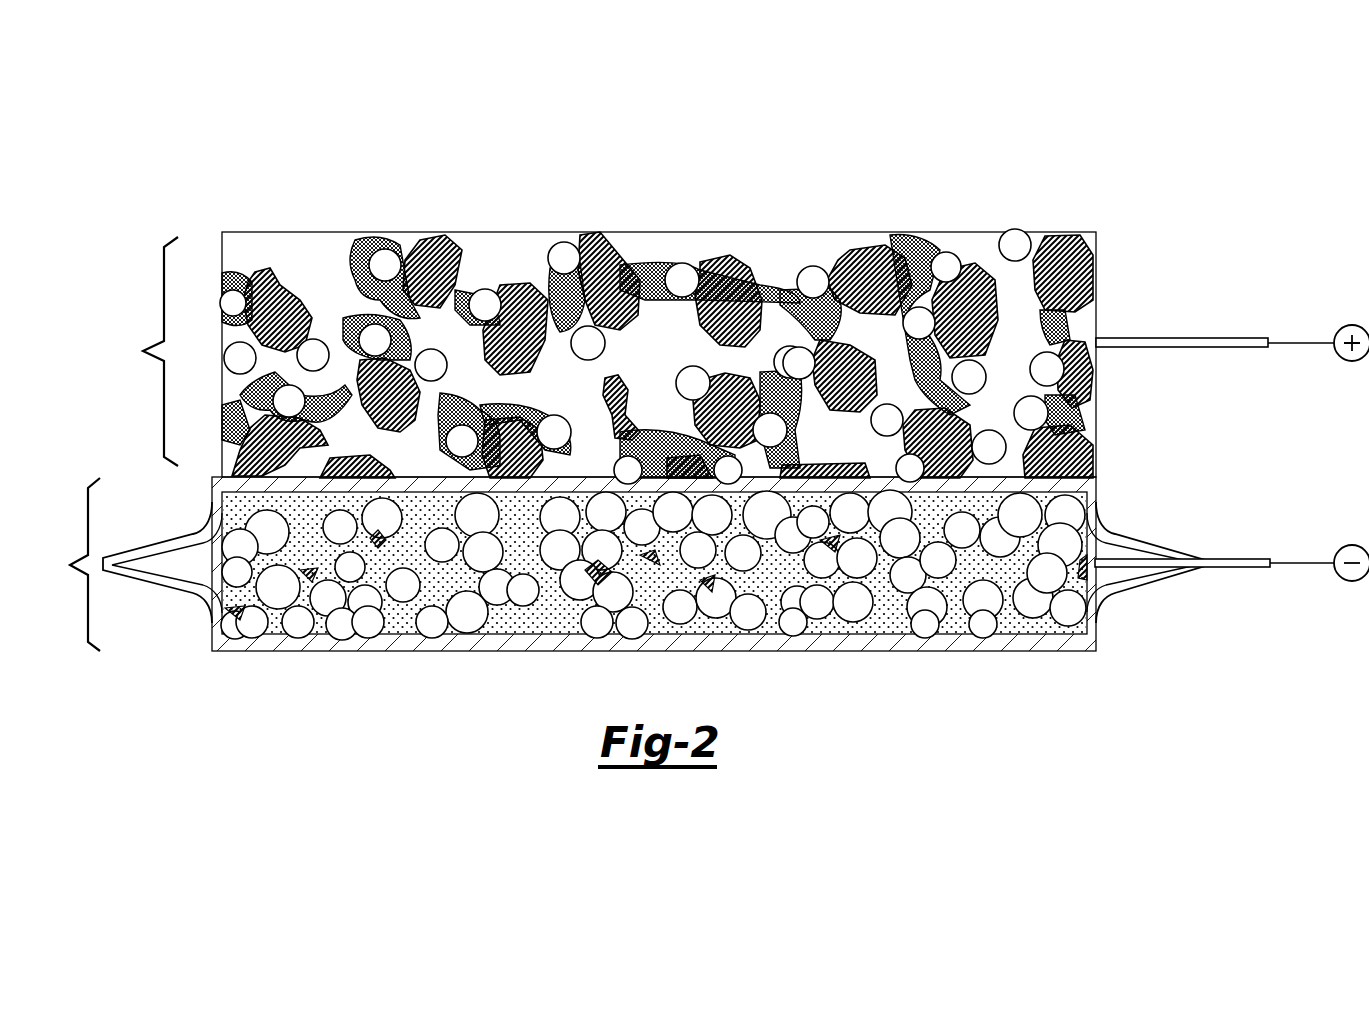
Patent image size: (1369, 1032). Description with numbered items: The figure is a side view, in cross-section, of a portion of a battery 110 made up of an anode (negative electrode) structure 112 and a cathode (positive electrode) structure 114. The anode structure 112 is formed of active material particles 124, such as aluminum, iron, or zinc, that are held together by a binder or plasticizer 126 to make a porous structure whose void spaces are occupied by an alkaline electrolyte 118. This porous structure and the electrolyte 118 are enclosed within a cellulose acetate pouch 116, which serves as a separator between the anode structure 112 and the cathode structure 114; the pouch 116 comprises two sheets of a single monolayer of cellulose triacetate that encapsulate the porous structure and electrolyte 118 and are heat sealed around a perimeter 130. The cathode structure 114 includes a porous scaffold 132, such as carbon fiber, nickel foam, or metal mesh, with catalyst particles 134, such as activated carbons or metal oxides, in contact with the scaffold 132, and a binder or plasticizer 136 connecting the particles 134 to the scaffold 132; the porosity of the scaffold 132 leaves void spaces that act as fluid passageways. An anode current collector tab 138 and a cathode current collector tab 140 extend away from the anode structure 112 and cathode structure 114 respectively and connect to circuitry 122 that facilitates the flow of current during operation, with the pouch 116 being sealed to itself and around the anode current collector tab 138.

The battery 110 is at (186, 688).
The anode structure 112 is at (61, 564).
The cathode structure 114 is at (139, 351).
The cellulose acetate pouch 116 is at (1057, 652).
The electrolyte 118 is at (527, 547).
The circuitry 122 is at (1296, 340).
The active material particles 124 is at (258, 527).
The binder or plasticizer 126 is at (375, 612).
The perimeter 130 is at (105, 572).
The scaffold 132 is at (268, 285).
The catalyst particles 134 is at (565, 250).
The binder or plasticizer 136 is at (280, 373).
The anode current collector tab 138 is at (1115, 569).
The cathode current collector tab 140 is at (1172, 350).